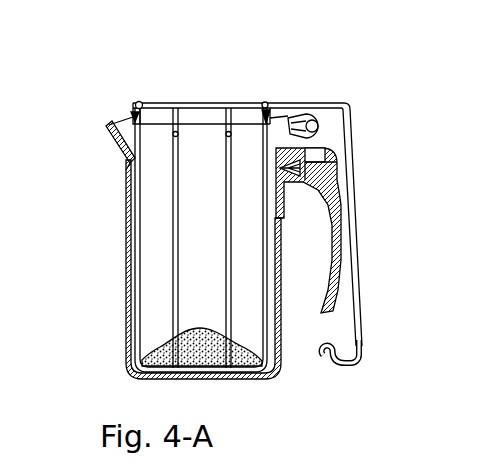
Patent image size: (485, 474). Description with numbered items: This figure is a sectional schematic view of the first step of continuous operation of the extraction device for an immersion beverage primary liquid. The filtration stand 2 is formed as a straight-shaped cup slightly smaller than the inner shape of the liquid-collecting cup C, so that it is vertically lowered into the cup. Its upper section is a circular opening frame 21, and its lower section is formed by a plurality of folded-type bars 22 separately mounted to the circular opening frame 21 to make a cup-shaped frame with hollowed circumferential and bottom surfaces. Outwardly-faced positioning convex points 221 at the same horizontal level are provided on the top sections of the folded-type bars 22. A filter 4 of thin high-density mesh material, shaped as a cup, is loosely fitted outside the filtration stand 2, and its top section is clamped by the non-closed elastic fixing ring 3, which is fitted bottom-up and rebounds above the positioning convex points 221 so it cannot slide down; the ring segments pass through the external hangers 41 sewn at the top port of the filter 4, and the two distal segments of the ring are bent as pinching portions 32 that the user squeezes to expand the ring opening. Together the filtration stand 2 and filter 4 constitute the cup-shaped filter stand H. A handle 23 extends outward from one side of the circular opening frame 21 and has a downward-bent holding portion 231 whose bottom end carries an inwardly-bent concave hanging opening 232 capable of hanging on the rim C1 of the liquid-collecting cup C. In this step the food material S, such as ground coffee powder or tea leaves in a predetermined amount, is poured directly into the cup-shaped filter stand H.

The filtration stand 2 is at (291, 97).
The elastic fixing ring 3 is at (133, 116).
The filter 4 is at (130, 160).
The circular opening frame 21 is at (137, 102).
The folded-type bars 22 is at (133, 188).
The handle 23 is at (320, 102).
The pinching portions 32 is at (310, 127).
The external hangers 41 is at (108, 128).
The positioning convex points 221 is at (264, 122).
The holding portion 231 is at (355, 230).
The hanging opening 232 is at (330, 354).
The liquid-collecting cup C is at (136, 334).
The rim C1 is at (268, 122).
The cup-shaped filter stand H is at (190, 100).
The food material S is at (176, 343).